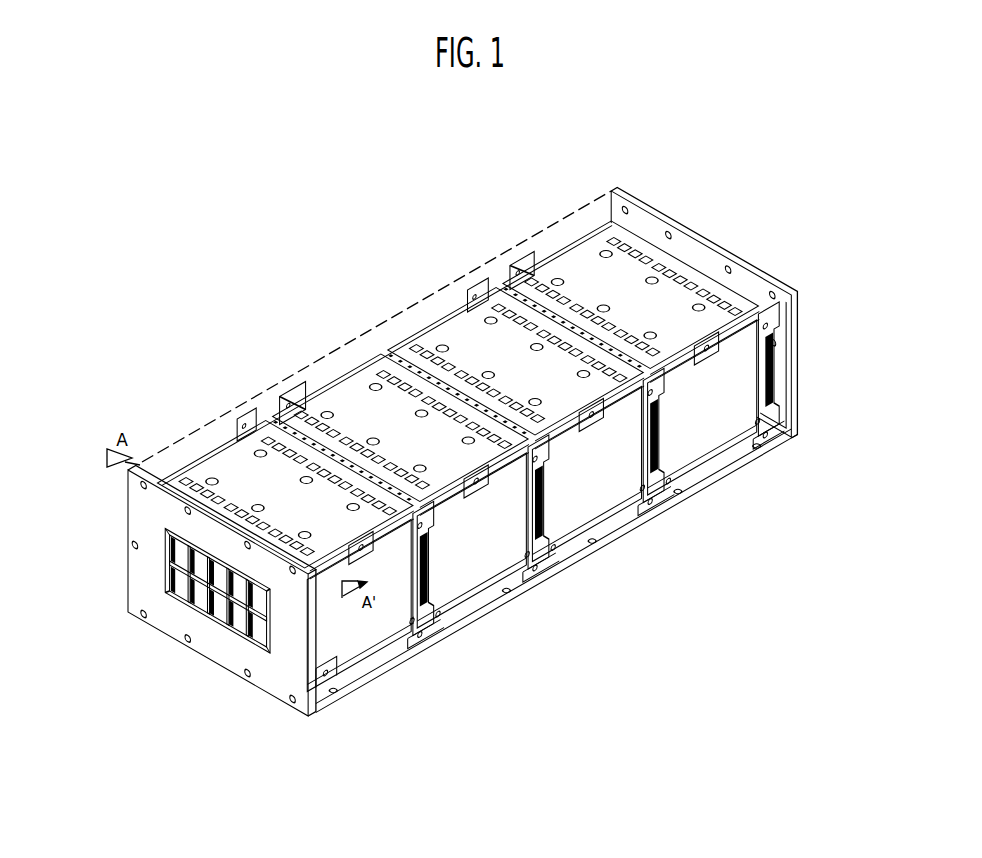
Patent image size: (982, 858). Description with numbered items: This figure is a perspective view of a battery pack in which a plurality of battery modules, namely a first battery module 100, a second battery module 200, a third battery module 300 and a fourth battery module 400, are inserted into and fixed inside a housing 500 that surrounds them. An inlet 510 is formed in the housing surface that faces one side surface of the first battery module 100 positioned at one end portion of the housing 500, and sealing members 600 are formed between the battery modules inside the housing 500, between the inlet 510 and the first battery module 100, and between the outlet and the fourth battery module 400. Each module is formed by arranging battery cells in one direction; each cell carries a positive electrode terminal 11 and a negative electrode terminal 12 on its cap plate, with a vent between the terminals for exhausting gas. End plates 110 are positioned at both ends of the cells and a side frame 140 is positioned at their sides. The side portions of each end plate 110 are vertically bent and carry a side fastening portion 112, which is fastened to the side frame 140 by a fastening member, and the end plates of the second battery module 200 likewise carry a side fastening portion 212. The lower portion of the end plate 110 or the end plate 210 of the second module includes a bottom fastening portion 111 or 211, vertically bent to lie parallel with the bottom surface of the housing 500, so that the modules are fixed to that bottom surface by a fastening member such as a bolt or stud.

The positive electrode terminal 11 is at (246, 428).
The negative electrode terminal 12 is at (386, 460).
The first battery module 100 is at (285, 504).
The end plate 110 is at (359, 637).
The bottom fastening portion 111 is at (418, 640).
The side fastening portion 112 is at (437, 613).
The side frame 140 is at (541, 518).
The second battery module 200 is at (401, 439).
The end plate of the second battery module 210 is at (501, 548).
The bottom fastening portion 211 is at (539, 548).
The side fastening portion 212 is at (438, 532).
The third battery module 300 is at (516, 425).
The fourth battery module 400 is at (631, 358).
The housing 500 is at (462, 277).
The inlet 510 is at (211, 606).
The sealing member 600 is at (768, 376).